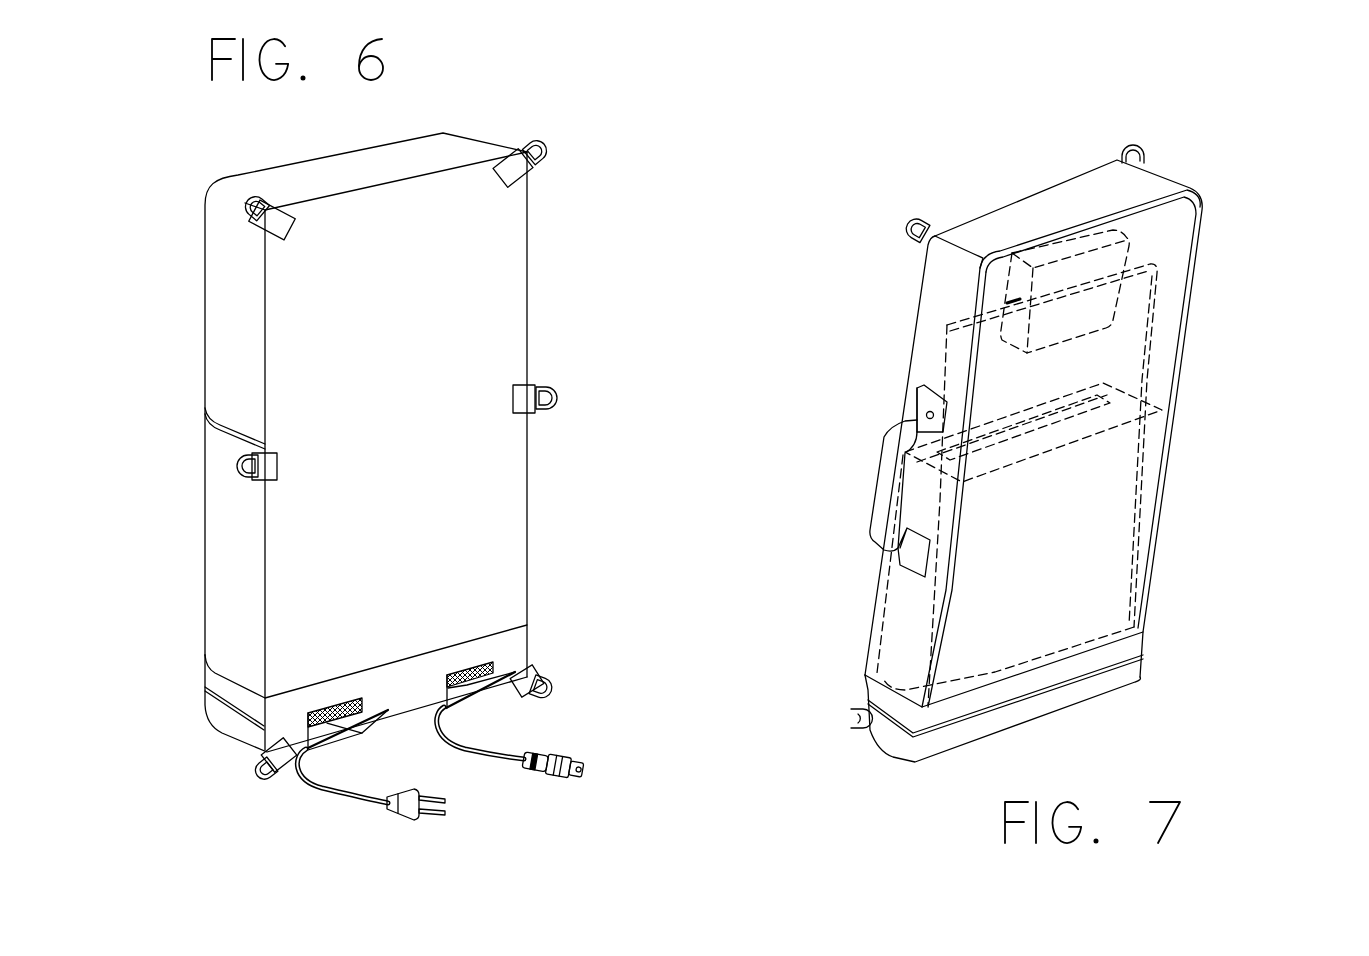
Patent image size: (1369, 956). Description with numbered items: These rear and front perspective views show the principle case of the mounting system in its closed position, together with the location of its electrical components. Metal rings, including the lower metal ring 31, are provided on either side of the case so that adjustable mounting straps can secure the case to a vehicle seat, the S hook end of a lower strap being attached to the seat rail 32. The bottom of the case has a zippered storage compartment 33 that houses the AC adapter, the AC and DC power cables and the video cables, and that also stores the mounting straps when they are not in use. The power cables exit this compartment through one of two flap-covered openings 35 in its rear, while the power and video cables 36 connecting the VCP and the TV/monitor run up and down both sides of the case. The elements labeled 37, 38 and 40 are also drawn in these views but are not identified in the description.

In FIG. 6, the lower metal ring 31 is at (250, 207).
In FIG. 6, the seat rail 32 is at (237, 465).
In FIG. 6, the zippered storage compartment 33 is at (262, 777).
In FIG. 6, the flap-covered openings 35 is at (233, 720).
In FIG. 7, the flap-covered openings 35 is at (907, 753).
In FIG. 6, the power and video cables 36 is at (387, 803).
In FIG. 6, the cord exit pockets with closure flaps 37 is at (480, 700).
In FIG. 7, the interior pocket (shown in phantom) 38 is at (947, 325).
In FIG. 7, the belt clip 40 is at (880, 480).